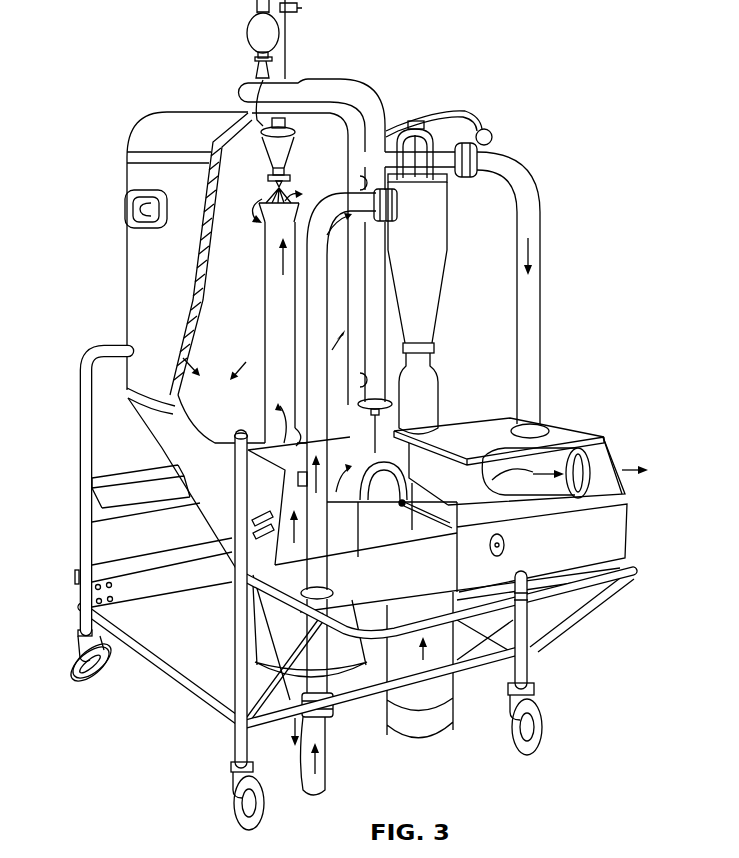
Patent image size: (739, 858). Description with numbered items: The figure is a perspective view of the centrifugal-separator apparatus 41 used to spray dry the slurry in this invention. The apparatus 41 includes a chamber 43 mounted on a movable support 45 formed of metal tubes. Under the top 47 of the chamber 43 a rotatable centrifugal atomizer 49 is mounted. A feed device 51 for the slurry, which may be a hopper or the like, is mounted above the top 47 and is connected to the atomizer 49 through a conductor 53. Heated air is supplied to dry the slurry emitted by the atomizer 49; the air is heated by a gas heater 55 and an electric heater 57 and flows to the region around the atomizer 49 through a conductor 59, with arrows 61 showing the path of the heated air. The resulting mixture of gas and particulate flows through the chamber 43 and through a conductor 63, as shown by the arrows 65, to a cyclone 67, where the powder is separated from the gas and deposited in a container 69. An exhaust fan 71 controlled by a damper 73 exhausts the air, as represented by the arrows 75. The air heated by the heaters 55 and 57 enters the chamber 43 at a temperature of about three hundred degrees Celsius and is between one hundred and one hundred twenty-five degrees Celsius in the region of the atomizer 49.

The centrifugal-separator apparatus 41 is at (63, 453).
The chamber 43 is at (127, 265).
The movable support 45 is at (187, 667).
The top 47 is at (148, 128).
The rotatable centrifugal atomizer 49 is at (285, 151).
The feed device 51 is at (257, 42).
The conductor 53 is at (255, 65).
The gas heater 55 is at (418, 708).
The electric heater 57 is at (342, 685).
The conductor 59 is at (268, 331).
The arrows 61 is at (272, 443).
The conductor 63 is at (330, 213).
The arrows 65 is at (222, 277).
The cyclone 67 is at (433, 235).
The container 69 is at (425, 398).
The exhaust fan 71 is at (498, 462).
The damper 73 is at (436, 512).
The arrows 75 is at (492, 486).